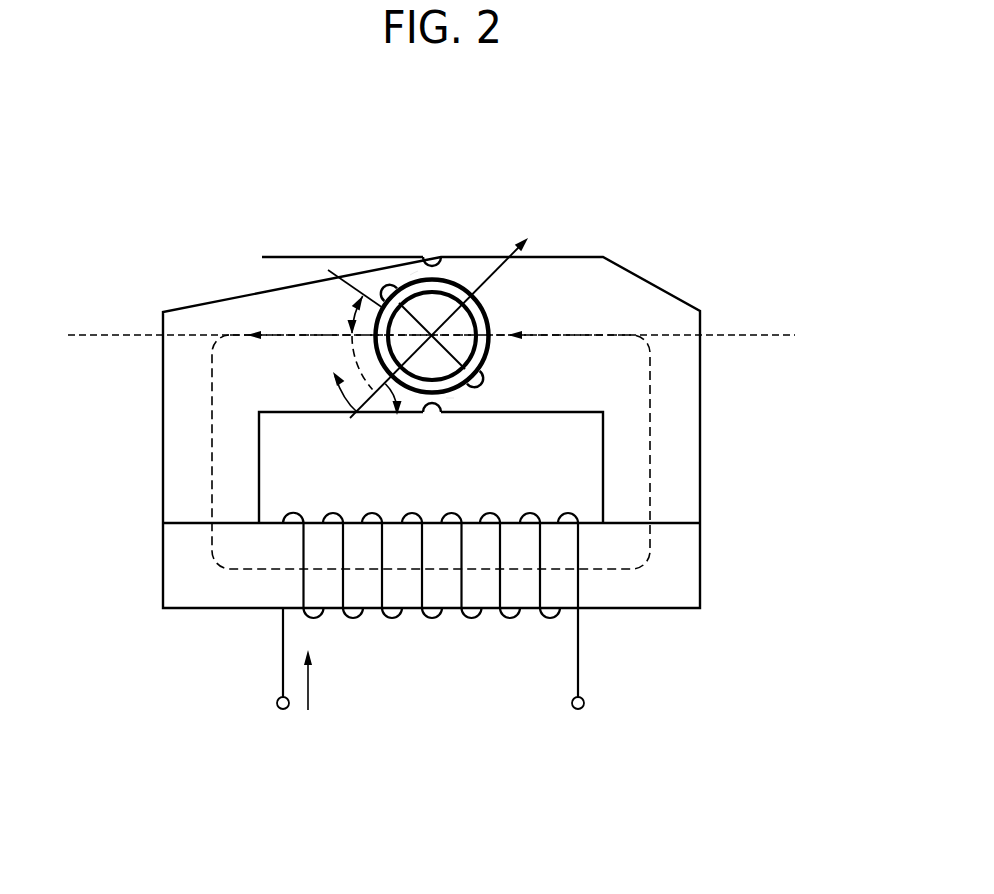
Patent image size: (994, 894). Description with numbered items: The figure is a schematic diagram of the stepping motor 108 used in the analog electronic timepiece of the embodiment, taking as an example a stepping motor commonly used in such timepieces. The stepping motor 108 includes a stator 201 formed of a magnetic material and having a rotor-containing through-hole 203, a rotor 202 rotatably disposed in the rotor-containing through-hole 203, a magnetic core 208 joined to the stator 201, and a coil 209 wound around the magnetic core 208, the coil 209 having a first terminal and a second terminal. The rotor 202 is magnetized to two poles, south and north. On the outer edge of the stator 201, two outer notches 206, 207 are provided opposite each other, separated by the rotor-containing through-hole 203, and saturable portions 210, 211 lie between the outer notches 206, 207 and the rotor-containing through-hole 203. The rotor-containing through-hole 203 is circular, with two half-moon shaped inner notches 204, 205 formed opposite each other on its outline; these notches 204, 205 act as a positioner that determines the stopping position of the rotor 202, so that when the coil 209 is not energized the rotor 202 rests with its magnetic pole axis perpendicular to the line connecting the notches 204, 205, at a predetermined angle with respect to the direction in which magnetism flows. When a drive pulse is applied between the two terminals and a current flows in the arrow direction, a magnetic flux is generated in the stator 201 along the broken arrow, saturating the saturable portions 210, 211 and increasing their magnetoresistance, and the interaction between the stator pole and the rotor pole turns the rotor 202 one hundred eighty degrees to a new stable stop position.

The stepping motor 108 is at (180, 280).
The stator 201 is at (683, 378).
The rotor 202 is at (463, 330).
The rotor-containing through-hole 203 is at (480, 316).
The inner notch 204 is at (485, 386).
The inner notch 205 is at (370, 282).
The outer notch 206 is at (435, 261).
The outer notch 207 is at (432, 418).
The magnetic core 208 is at (182, 563).
The coil 209 is at (390, 618).
The saturable portion 210 is at (417, 268).
The saturable portion 211 is at (450, 397).